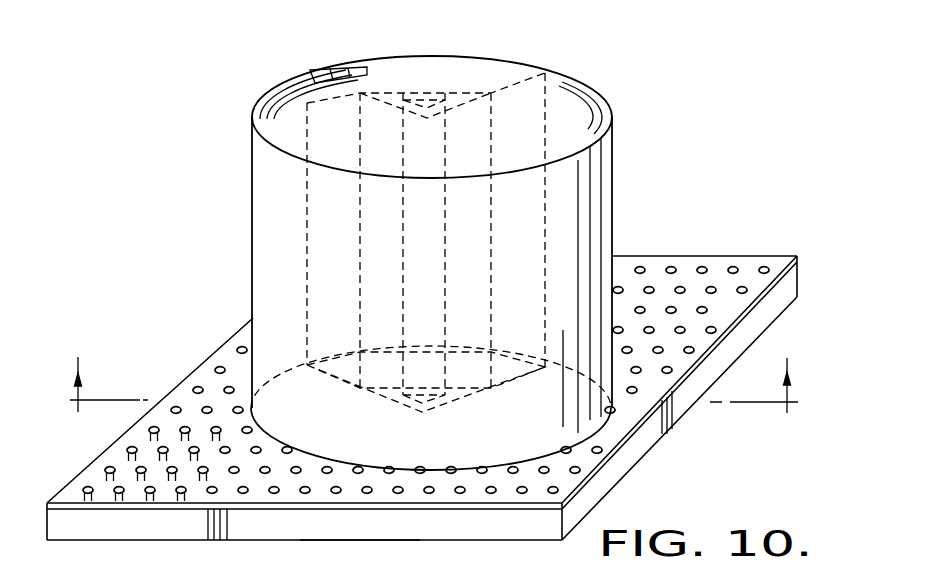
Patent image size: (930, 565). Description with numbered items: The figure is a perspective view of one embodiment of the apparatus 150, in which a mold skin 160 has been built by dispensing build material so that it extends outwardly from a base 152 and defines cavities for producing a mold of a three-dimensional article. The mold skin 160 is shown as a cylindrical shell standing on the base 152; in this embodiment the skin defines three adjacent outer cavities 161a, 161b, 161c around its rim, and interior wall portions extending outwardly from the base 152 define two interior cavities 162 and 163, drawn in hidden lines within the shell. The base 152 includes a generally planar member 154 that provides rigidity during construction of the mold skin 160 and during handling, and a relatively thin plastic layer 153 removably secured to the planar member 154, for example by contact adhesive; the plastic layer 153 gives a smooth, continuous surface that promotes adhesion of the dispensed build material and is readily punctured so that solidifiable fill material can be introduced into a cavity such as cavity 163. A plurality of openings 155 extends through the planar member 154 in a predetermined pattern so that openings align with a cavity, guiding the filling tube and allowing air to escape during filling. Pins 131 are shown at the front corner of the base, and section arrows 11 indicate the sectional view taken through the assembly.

The apparatus 150 is at (431, 298).
The base 152 is at (431, 368).
The plastic layer 153 is at (600, 471).
The planar member 154 is at (533, 525).
The openings 155 is at (220, 368).
The pins 131 is at (96, 559).
The mold skin 160 is at (425, 251).
The outer cavity 161a is at (560, 128).
The outer cavity 161b is at (300, 127).
The outer cavity 161c is at (358, 57).
The interior cavity 162 is at (522, 80).
The interior cavity 163 is at (440, 95).
The section line 11- 11 is at (432, 402).